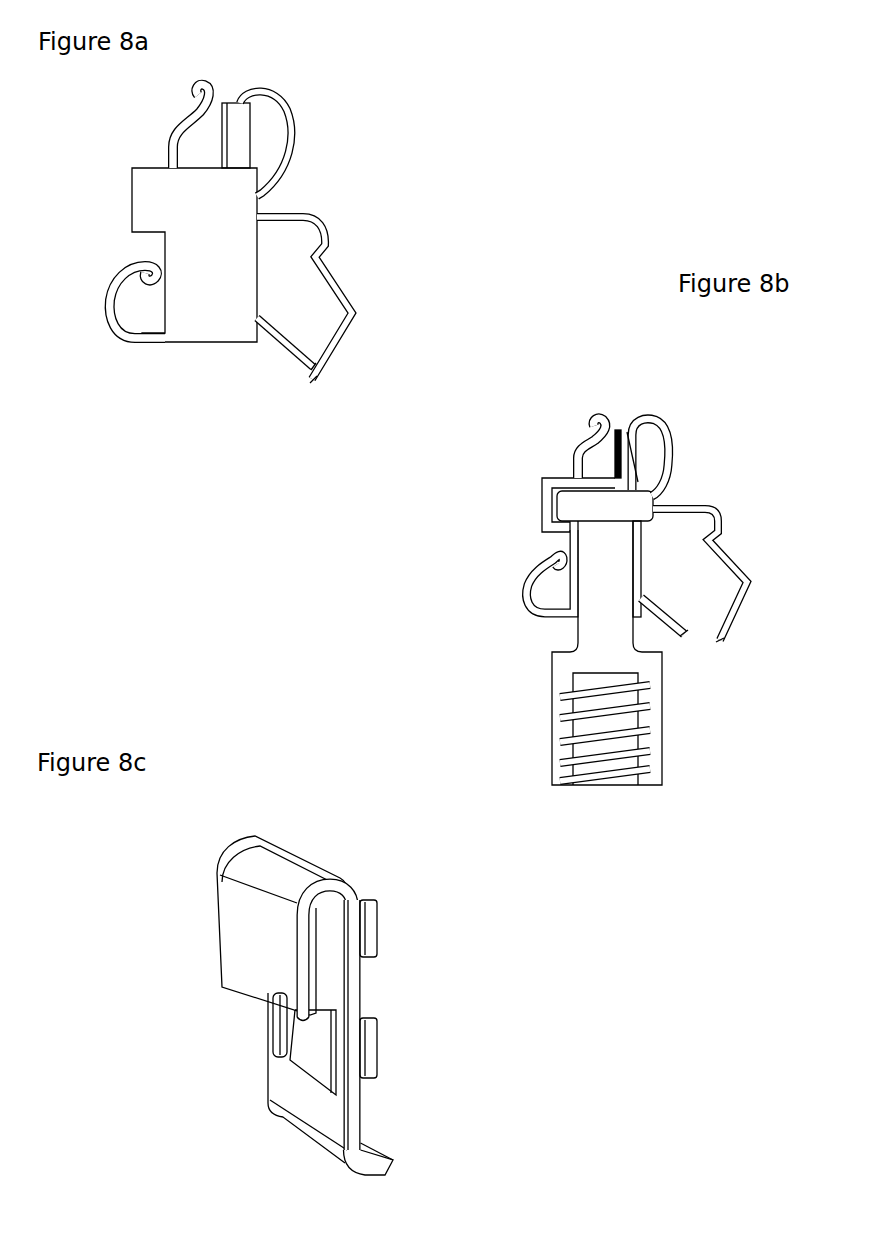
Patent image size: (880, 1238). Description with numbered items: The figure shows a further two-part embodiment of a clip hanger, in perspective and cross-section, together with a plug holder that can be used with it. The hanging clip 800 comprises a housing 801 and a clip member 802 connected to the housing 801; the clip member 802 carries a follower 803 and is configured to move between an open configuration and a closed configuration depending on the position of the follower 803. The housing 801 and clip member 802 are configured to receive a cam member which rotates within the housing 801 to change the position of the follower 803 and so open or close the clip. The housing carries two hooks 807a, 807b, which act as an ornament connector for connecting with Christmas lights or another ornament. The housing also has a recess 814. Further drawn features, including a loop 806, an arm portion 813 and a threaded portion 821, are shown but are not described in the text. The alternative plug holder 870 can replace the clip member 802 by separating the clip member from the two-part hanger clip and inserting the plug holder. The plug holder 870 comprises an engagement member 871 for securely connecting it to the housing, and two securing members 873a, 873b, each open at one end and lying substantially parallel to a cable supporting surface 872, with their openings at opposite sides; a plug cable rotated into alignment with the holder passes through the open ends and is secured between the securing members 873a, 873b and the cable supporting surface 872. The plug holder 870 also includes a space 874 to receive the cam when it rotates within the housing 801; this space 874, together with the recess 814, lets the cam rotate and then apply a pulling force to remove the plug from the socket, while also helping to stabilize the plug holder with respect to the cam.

In FIG. 8a, the hanging clip 800 is at (264, 303).
In FIG. 8a, the housing 801 is at (230, 326).
In FIG. 8a, the clip member 802 is at (322, 222).
In FIG. 8b, the clip member 802 is at (717, 547).
In FIG. 8b, the follower 803 is at (662, 499).
In FIG. 8b, the retaining loop 806 is at (643, 423).
In FIG. 8a, the hook 807a is at (135, 326).
In FIG. 8a, the hook 807b is at (205, 85).
In FIG. 8b, the lower bracket arm 813 is at (680, 628).
In FIG. 8b, the recess 814 is at (537, 518).
In FIG. 8b, the threaded portion 821 is at (603, 642).
In FIG. 8c, the plug holder 870 is at (308, 1018).
In FIG. 8c, the engagement member 871 is at (262, 964).
In FIG. 8c, the cable supporting surface 872 is at (365, 1107).
In FIG. 8c, the securing member 873a is at (372, 935).
In FIG. 8c, the securing member 873b is at (372, 1048).
In FIG. 8c, the space 874 is at (302, 1040).